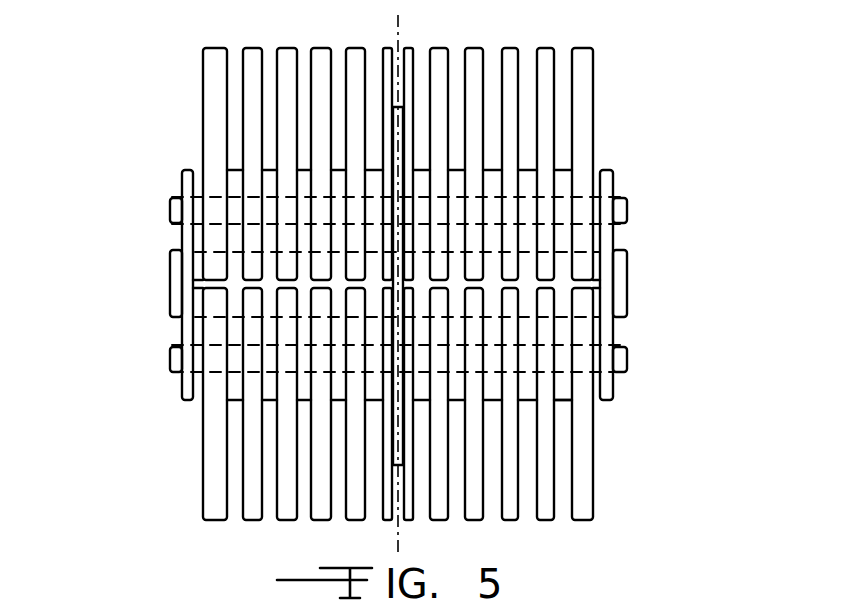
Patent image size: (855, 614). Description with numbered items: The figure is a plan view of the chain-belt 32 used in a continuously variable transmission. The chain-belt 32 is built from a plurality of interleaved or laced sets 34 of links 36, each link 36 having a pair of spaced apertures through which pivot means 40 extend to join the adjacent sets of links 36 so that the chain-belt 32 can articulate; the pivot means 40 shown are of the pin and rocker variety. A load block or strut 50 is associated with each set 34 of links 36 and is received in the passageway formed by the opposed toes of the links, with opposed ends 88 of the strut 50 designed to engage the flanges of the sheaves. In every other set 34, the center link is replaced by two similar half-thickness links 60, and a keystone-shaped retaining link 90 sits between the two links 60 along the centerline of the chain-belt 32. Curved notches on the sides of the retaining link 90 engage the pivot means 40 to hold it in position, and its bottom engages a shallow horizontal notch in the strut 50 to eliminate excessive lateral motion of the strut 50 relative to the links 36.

The chain-belt 32 is at (606, 106).
The set of links 34 is at (642, 170).
The link 36 is at (560, 390).
The pivot means 40 is at (172, 211).
The load block or strut 50 is at (170, 287).
The half thickness link 60 is at (385, 55).
The opposed end of strut 88 is at (170, 307).
The retaining link 90 is at (400, 330).